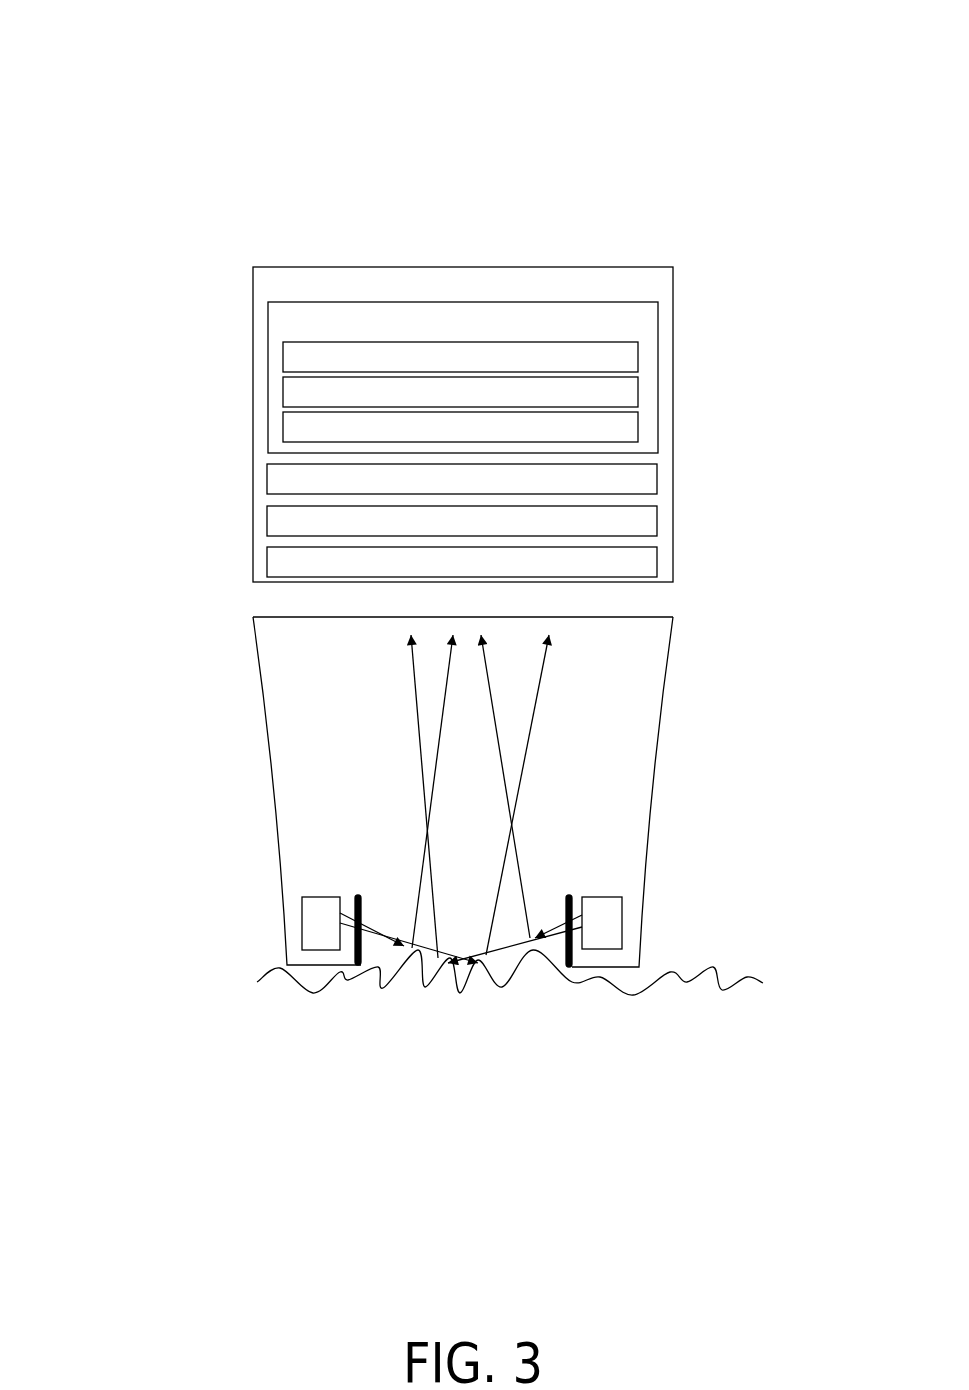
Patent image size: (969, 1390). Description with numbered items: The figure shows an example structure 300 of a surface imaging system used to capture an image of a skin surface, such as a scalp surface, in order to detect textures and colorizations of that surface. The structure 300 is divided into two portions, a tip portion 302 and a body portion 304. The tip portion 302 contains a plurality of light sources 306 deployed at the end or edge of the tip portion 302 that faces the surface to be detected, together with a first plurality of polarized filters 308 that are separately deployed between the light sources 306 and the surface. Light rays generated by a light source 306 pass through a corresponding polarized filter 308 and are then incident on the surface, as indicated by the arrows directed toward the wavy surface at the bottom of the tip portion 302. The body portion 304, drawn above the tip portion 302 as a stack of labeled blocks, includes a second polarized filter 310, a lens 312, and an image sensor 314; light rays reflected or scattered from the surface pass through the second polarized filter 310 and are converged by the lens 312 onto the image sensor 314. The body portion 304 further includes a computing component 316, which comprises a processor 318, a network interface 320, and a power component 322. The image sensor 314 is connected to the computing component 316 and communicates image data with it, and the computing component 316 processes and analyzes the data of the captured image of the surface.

The structure 300 is at (778, 55).
The tip portion 302 is at (699, 633).
The body portion 304 is at (543, 298).
The light source 306 is at (870, 805).
The polarized filter 308 is at (907, 735).
The second polarized filter 310 is at (587, 573).
The lens 312 is at (501, 531).
The image sensor 314 is at (542, 491).
The computing component 316 is at (587, 333).
The processor 318 is at (527, 366).
The network interface 320 is at (567, 401).
The power component 322 is at (565, 438).